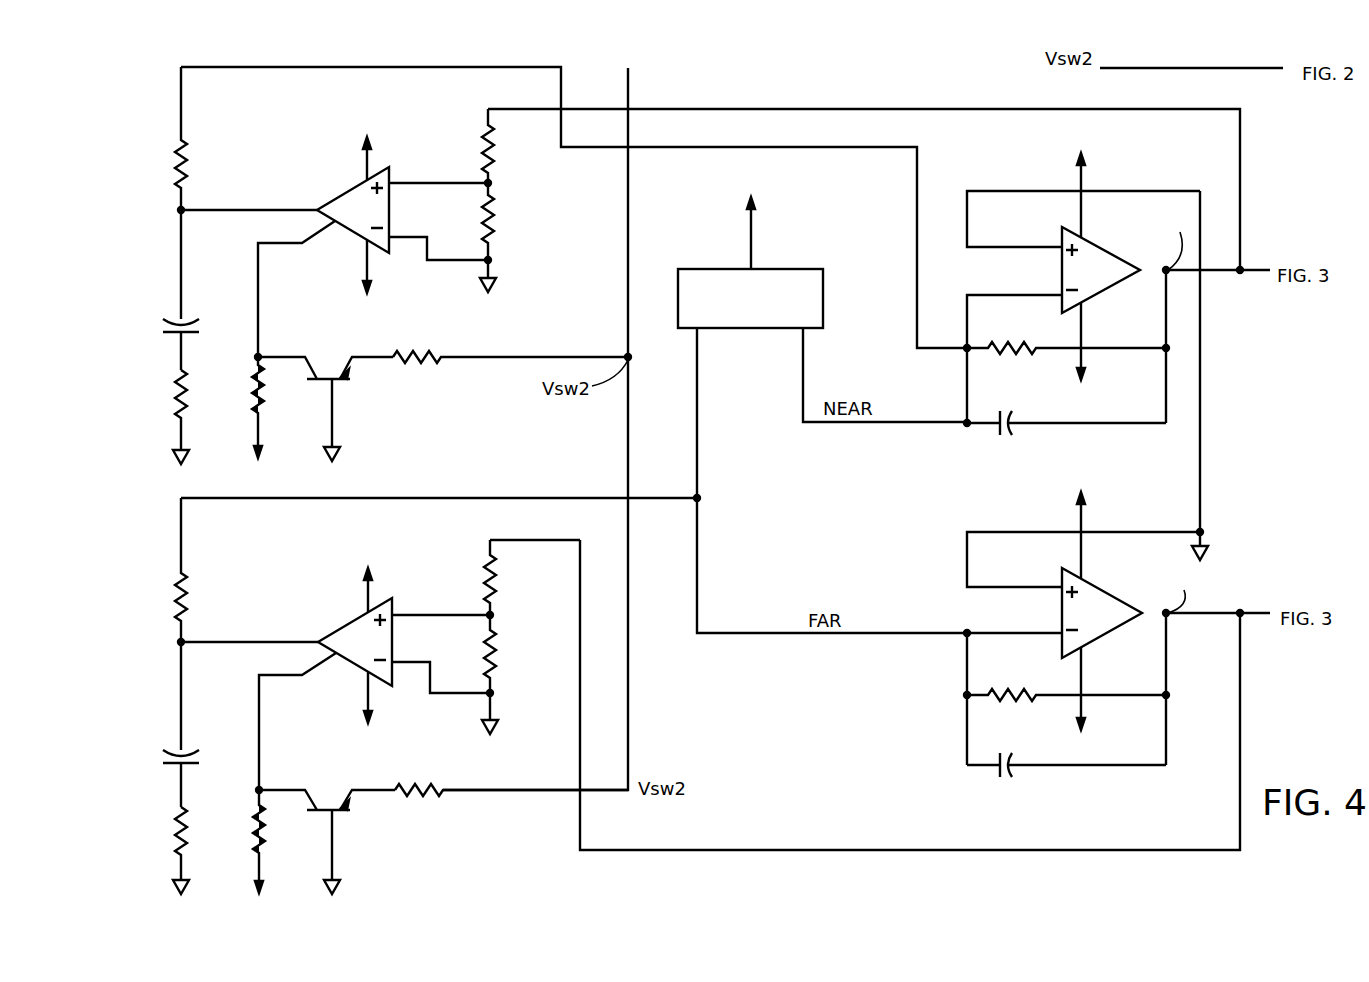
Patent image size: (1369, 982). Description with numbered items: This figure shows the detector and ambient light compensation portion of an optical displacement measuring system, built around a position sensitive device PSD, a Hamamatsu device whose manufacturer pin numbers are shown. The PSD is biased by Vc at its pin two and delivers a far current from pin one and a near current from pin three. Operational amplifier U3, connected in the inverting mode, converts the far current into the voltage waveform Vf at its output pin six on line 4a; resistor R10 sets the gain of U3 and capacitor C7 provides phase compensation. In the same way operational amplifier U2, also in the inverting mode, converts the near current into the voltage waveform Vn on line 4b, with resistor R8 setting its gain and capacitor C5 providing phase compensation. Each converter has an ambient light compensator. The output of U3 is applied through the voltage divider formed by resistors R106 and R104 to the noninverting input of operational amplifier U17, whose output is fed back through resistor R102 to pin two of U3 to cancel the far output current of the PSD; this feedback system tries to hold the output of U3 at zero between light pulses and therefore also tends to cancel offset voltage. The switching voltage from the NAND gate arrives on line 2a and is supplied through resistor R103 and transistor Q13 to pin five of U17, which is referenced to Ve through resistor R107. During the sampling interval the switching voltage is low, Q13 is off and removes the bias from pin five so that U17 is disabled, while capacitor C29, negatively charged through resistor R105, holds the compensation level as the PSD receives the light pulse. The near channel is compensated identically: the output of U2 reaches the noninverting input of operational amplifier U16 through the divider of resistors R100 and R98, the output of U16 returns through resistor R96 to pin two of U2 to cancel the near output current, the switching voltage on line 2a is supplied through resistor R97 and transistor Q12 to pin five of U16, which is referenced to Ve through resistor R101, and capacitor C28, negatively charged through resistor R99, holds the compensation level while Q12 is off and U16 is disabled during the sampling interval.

The line 2a is at (1191, 58).
The line 4a is at (1218, 602).
The line 4b is at (1218, 259).
The resistor R96 is at (202, 138).
The capacitor C28 is at (160, 290).
The resistor R99 is at (154, 417).
The operational amplifier U16 is at (373, 232).
The resistor R100 is at (515, 146).
The resistor R98 is at (508, 237).
The resistor R101 is at (250, 395).
The transistor Q12 is at (325, 395).
The resistor R97 is at (510, 343).
The resistor R102 is at (210, 570).
The capacitor C29 is at (159, 724).
The resistor R105 is at (154, 850).
The operational amplifier U17 is at (374, 667).
The resistor R106 is at (532, 577).
The resistor R104 is at (518, 674).
The resistor R107 is at (250, 822).
The transistor Q13 is at (327, 829).
The resistor R103 is at (511, 805).
The position sensitive device PSD is at (759, 260).
The operational amplifier U2 is at (1083, 275).
The resistor R8 is at (1066, 337).
The capacitor C5 is at (1066, 352).
The operational amplifier U3 is at (1084, 615).
The resistor R10 is at (1066, 683).
The capacitor C7 is at (1066, 710).